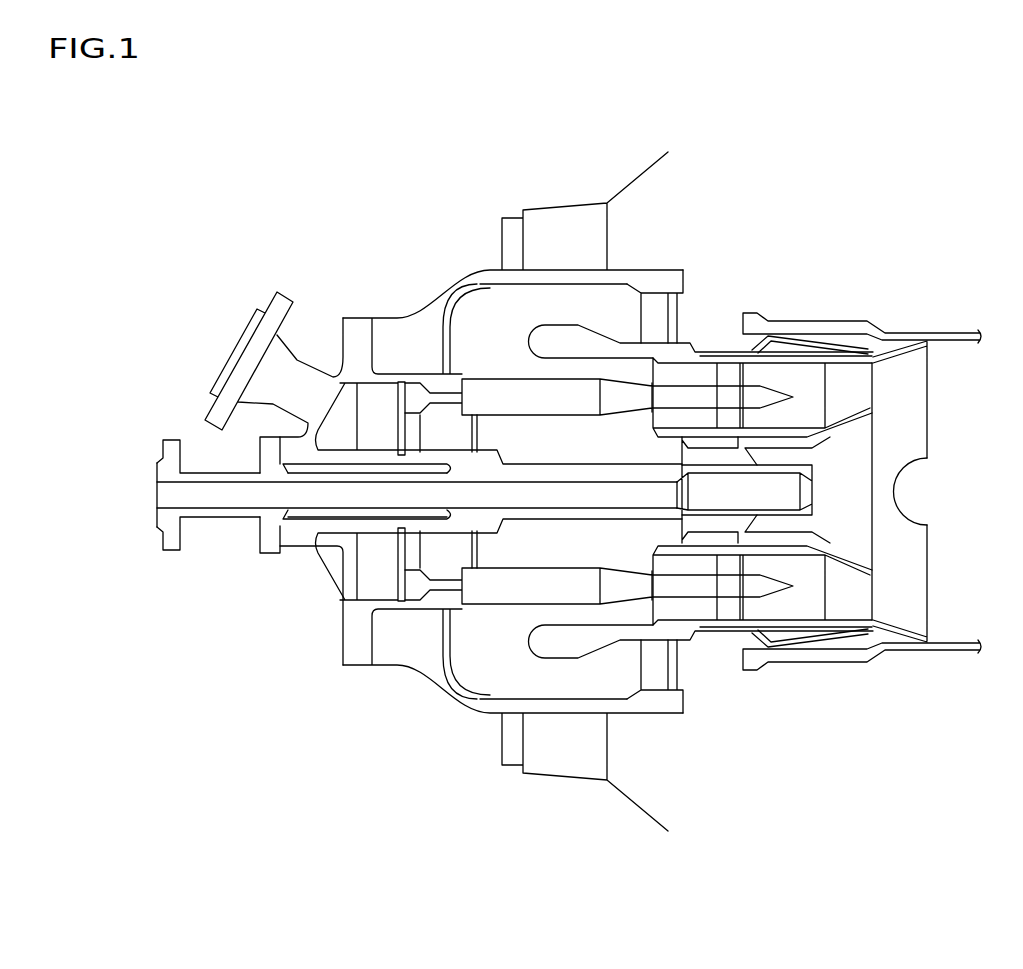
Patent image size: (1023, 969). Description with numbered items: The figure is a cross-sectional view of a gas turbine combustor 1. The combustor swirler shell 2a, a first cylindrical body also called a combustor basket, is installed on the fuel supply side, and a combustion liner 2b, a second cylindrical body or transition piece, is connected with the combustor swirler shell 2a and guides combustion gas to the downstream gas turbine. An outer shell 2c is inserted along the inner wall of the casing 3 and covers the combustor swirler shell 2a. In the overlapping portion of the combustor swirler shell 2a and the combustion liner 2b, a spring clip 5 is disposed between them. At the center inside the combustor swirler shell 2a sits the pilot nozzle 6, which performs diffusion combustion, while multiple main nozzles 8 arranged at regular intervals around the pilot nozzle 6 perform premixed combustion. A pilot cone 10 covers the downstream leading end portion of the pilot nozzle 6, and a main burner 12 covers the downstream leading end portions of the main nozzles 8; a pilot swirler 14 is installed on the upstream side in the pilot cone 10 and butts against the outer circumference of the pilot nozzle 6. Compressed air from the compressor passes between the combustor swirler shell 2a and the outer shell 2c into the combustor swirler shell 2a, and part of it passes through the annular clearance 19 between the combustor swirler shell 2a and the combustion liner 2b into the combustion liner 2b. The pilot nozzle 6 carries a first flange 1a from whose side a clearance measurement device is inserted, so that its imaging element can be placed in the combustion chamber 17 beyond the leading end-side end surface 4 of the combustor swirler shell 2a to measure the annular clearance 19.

The combustor 1 is at (370, 254).
The first flange 1a is at (295, 537).
The combustor swirler shell 2a is at (703, 346).
The combustion liner 2b is at (863, 318).
The outer shell 2c is at (648, 268).
The casing 3 is at (543, 207).
The leading end-side end surface 4 is at (927, 413).
The spring clip 5 is at (813, 337).
The pilot nozzle 6 is at (813, 495).
The main nozzles 8 is at (580, 418).
The pilot cone 10 is at (872, 545).
The main burner 12 is at (873, 383).
The pilot swirler 14 is at (753, 517).
The combustion chamber 17 is at (989, 497).
The annular clearance 19 is at (937, 341).